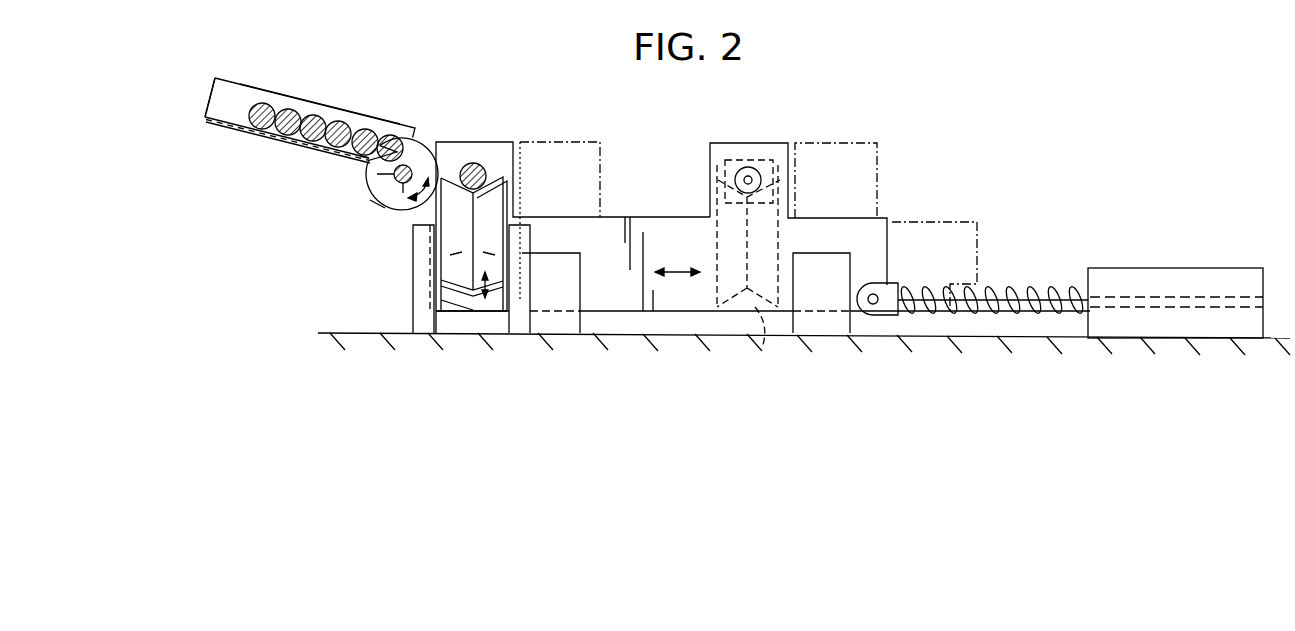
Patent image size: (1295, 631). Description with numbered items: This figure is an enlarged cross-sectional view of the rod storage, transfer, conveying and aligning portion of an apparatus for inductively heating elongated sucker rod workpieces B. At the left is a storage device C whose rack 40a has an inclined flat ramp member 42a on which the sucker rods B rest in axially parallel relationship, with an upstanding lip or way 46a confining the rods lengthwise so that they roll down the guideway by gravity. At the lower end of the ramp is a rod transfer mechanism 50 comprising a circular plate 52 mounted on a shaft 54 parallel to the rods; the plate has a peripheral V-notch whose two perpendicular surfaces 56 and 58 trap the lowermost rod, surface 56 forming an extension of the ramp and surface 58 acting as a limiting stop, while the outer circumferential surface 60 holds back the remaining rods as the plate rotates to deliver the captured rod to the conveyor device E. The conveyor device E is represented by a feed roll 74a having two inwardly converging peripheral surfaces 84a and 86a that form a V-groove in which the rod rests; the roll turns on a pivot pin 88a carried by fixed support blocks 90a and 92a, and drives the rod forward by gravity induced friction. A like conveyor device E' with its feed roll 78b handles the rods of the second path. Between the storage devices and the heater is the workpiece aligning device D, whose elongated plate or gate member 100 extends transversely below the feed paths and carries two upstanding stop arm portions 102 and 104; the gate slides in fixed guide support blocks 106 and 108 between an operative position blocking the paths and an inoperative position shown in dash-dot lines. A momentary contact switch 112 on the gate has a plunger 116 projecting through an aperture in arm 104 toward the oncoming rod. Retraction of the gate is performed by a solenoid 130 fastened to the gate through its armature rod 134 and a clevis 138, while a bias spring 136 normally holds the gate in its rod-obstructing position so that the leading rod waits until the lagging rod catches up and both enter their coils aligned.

The storage device C is at (235, 78).
The rack 40a is at (282, 92).
The upstanding lip or way 46a is at (223, 98).
The flat ramp member 42a is at (263, 137).
The notch surface 56 is at (367, 157).
The sucker rod workpiece B is at (342, 118).
The notch surface 58 is at (398, 140).
The rod transfer mechanism 50 is at (425, 138).
The circular plate 52 is at (373, 177).
The outer circumferential surface 60 is at (378, 203).
The shaft 54 is at (383, 207).
The stop arm portion 102 is at (512, 142).
The peripheral surface 84a is at (445, 176).
The peripheral surface 86a is at (499, 176).
The conveyor device E is at (499, 231).
The pivot pin 88a is at (438, 238).
The fixed support block 90a is at (418, 272).
The fixed support block 92a is at (530, 243).
The feed roll 74a is at (457, 298).
The fixed guide support block 106 is at (560, 322).
The plate or gate member 100 is at (650, 232).
The stop arm portion 104 is at (787, 143).
The momentary electrical contact switch 112 is at (776, 164).
The operating arm or plunger 116 is at (750, 172).
The conveyor device E' is at (715, 236).
The feed roll 78b is at (776, 342).
The fixed guide support block 108 is at (832, 325).
The workpiece aligning device D is at (995, 243).
The clevis 138 is at (890, 287).
The bias spring 136 is at (1013, 285).
The solenoid armature rod 134 is at (1057, 290).
The solenoid 130 is at (1195, 237).